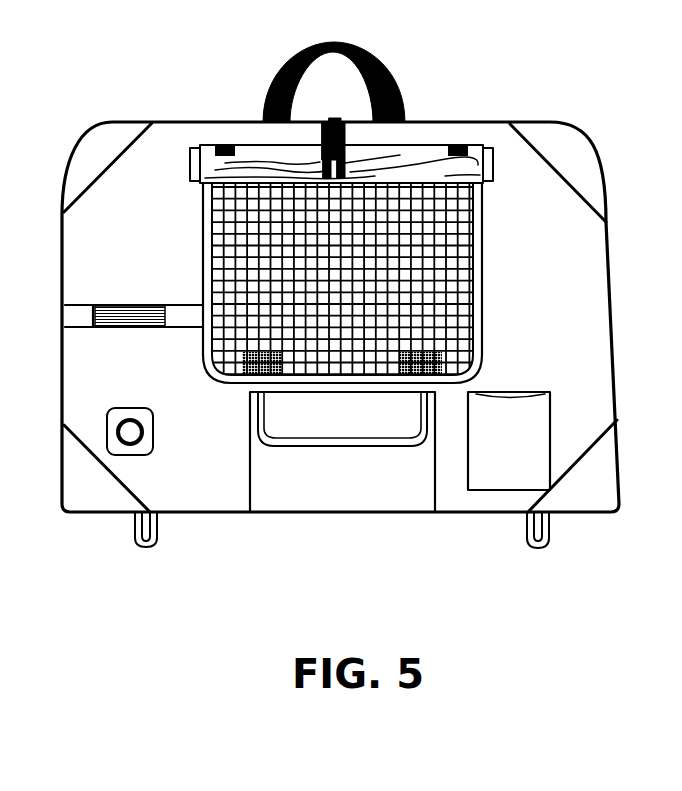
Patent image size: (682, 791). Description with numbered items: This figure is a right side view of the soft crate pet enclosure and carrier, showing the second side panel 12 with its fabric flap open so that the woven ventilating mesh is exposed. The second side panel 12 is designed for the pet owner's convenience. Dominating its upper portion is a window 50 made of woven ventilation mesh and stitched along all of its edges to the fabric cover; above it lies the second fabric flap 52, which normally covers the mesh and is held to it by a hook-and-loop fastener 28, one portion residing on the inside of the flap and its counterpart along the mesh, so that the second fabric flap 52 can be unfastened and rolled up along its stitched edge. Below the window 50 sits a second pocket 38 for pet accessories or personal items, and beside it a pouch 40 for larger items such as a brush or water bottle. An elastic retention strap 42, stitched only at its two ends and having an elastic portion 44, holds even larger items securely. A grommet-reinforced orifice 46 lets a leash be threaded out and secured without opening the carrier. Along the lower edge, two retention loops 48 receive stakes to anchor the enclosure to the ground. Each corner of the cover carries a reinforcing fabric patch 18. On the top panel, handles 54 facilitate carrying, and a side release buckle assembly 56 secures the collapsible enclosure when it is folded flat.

The second side panel 12 is at (212, 488).
The fabric patch 18 is at (603, 480).
The hook-and-loop fastener 28 is at (447, 354).
The second pocket 38 is at (335, 485).
The pouch 40 is at (528, 430).
The elastic retention strap 42 is at (80, 315).
The elastic portion 44 is at (127, 330).
The orifice 46 is at (107, 413).
The retention loops 48 is at (523, 530).
The window 50 is at (475, 262).
The second fabric flap 52 is at (468, 167).
The handles 54 is at (283, 76).
The side release buckle assembly 56 is at (348, 156).